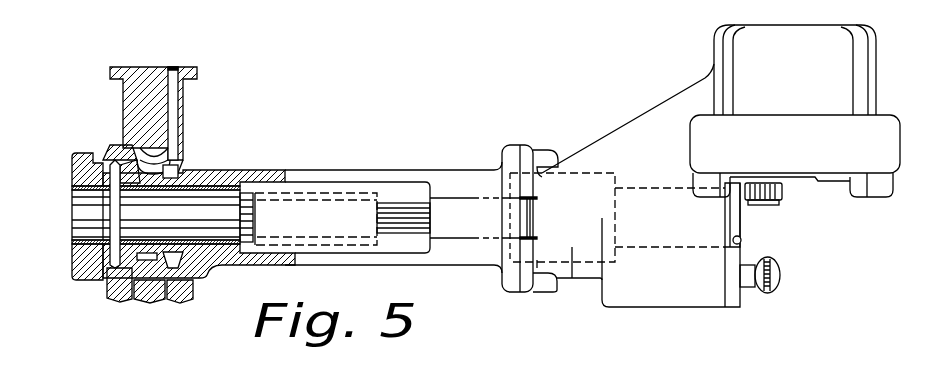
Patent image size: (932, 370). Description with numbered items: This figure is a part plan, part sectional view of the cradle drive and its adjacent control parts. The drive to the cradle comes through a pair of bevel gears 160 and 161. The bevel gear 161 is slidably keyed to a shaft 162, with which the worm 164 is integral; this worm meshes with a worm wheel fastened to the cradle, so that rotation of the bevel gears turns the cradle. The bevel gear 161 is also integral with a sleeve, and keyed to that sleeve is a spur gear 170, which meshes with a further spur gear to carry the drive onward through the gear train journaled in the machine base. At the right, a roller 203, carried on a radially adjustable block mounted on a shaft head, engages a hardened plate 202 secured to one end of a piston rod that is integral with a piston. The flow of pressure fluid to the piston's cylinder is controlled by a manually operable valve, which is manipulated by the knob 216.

The bevel gear 160 is at (108, 290).
The bevel gear 161 is at (113, 160).
The spur gear 170 is at (166, 176).
The worm 164 is at (338, 197).
The shaft 162 is at (410, 204).
The roller 203 is at (783, 199).
The hardened plate 202 is at (741, 228).
The knob 216 is at (781, 275).